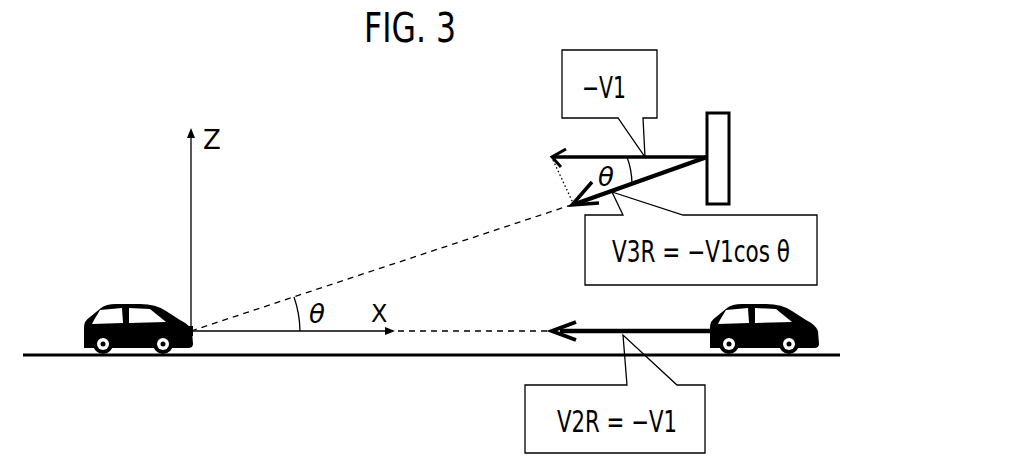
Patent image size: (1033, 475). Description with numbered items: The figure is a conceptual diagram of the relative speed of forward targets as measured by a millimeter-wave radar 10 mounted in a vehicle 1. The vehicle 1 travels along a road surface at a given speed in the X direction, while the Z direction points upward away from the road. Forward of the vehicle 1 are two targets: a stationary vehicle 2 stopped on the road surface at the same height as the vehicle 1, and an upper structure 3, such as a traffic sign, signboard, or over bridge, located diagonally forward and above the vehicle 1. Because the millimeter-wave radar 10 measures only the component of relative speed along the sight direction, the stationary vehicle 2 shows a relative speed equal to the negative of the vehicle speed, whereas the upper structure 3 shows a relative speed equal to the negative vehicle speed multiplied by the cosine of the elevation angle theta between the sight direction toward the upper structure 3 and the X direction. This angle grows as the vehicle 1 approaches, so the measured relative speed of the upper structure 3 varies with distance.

The vehicle 1 is at (137, 353).
The stationary vehicle 2 is at (763, 352).
The upper structure 3 is at (729, 137).
The millimeter-wave radar 10 is at (188, 325).